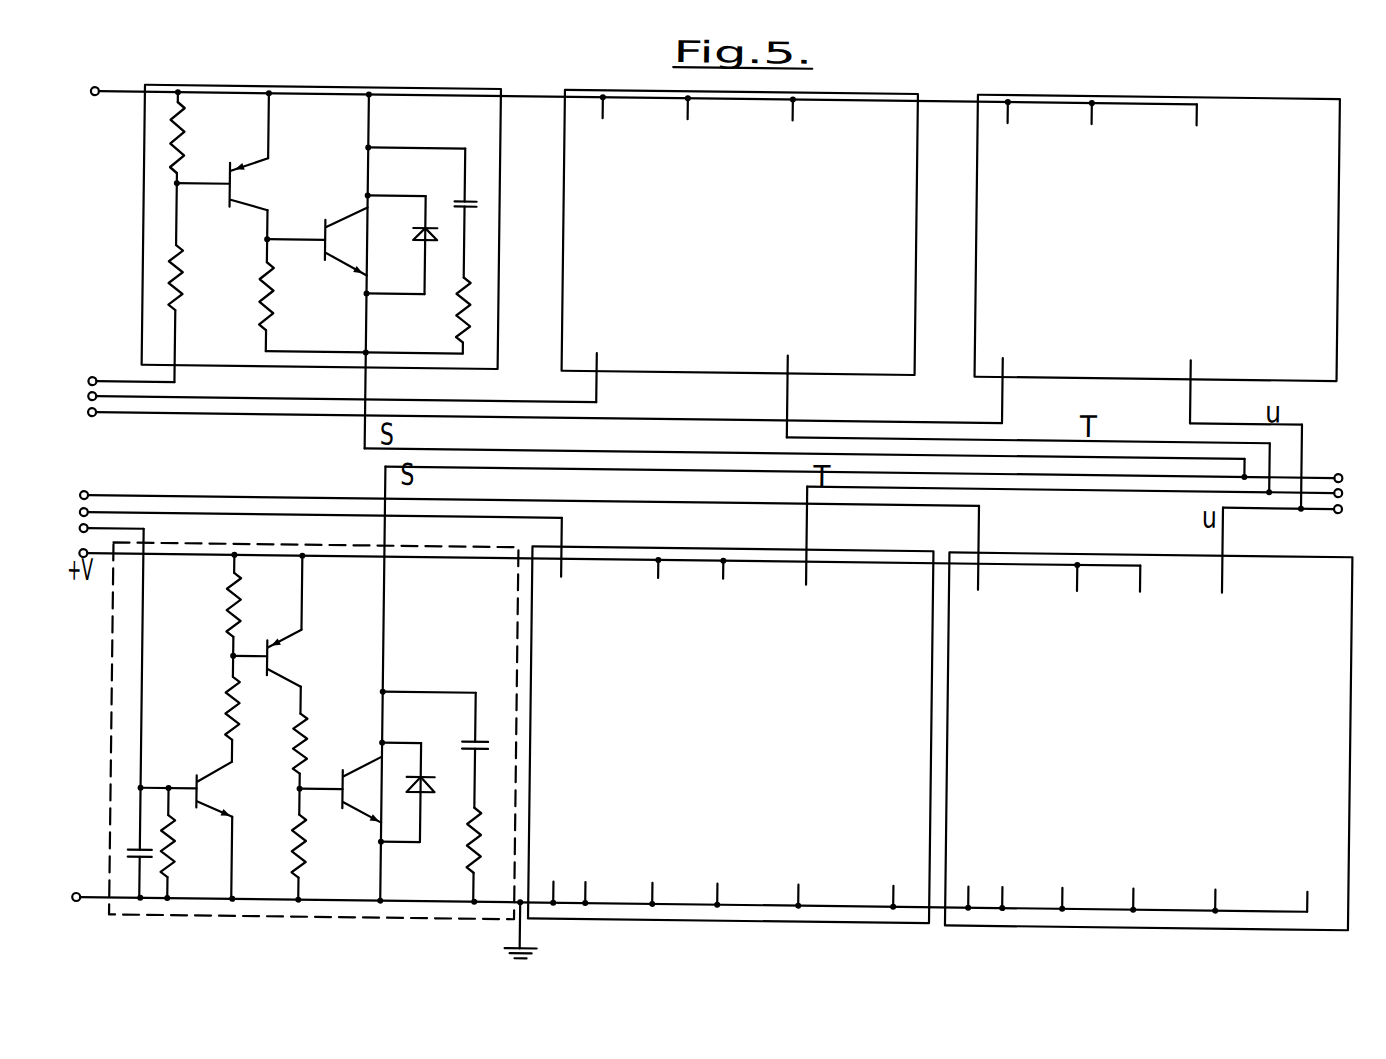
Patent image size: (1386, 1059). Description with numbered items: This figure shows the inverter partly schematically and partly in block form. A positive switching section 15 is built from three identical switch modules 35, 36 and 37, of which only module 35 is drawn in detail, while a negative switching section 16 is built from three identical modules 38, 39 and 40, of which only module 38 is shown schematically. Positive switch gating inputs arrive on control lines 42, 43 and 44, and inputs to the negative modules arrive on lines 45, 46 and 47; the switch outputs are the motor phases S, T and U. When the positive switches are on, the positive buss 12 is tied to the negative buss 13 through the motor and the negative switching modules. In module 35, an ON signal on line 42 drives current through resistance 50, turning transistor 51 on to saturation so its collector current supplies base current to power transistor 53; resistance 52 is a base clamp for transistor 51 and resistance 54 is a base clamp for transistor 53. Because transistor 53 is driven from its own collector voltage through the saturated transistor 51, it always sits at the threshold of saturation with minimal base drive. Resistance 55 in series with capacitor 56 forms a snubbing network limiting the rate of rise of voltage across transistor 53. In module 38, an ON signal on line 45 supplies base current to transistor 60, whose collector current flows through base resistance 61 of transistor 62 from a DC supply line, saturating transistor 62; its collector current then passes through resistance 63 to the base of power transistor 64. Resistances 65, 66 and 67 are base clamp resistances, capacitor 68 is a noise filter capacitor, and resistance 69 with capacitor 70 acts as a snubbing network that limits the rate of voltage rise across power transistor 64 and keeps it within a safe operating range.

The positive buss 12 is at (121, 92).
The negative buss 13 is at (103, 901).
The positive switching section 15 is at (882, 68).
The negative switching section 16 is at (848, 914).
The switch module 35 is at (395, 136).
The switch module 36 is at (921, 211).
The switch module 37 is at (1342, 184).
The switch module 38 is at (441, 651).
The switch module 39 is at (924, 539).
The switch module 40 is at (1249, 542).
The control line 42 is at (120, 377).
The control line 43 is at (118, 399).
The control line 44 is at (147, 413).
The control line 45 is at (102, 529).
The control line 46 is at (121, 510).
The control line 47 is at (184, 493).
The resistance 50 is at (186, 277).
The transistor 51 is at (239, 182).
The resistance 52 is at (184, 151).
The power transistor 53 is at (336, 237).
The resistance 54 is at (274, 291).
The resistance 55 is at (471, 318).
The capacitor 56 is at (482, 197).
The transistor 60 is at (218, 791).
The base resistance 61 is at (235, 695).
The transistor 62 is at (286, 662).
The resistance 63 is at (317, 740).
The power transistor 64 is at (360, 786).
The resistance 65 is at (249, 604).
The resistance 66 is at (183, 848).
The resistance 67 is at (317, 858).
The capacitor 68 is at (135, 836).
The resistance 69 is at (493, 811).
The capacitor 70 is at (494, 732).